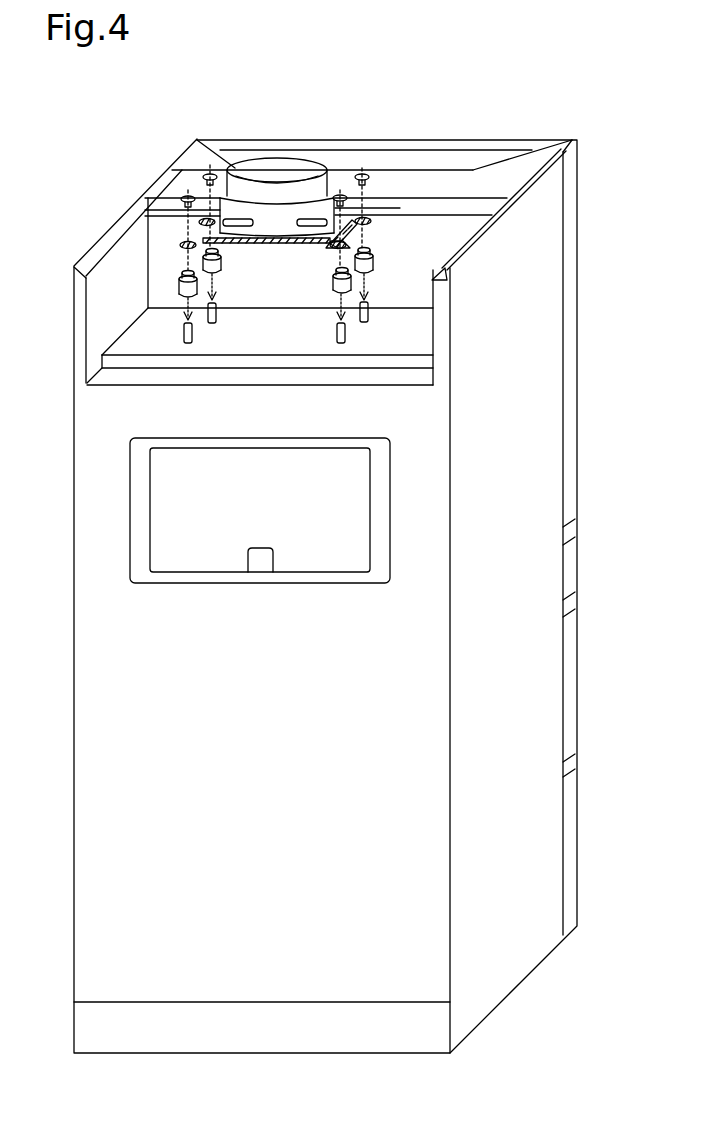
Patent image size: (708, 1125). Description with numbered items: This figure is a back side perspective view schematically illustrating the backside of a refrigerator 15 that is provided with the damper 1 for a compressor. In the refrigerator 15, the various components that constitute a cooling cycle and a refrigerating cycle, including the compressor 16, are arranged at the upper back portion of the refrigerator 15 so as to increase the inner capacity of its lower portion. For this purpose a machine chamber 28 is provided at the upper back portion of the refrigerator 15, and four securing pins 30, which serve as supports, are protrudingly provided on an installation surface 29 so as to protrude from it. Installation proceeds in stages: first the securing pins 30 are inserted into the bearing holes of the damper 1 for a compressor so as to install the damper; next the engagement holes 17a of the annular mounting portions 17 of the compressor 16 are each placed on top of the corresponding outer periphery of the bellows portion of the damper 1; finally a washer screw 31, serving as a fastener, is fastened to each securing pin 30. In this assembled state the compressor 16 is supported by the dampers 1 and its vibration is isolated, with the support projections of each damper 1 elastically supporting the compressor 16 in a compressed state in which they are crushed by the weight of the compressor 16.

The refrigerator 15 is at (597, 129).
The compressor 16 is at (277, 158).
The washer screw 31 is at (208, 175).
The annular mounting portion 17 is at (184, 242).
The engagement hole 17a is at (150, 222).
The damper for a compressor 1 is at (178, 283).
The machine chamber 28 is at (108, 316).
The securing pin 30 is at (196, 336).
The installation surface 29 is at (262, 355).